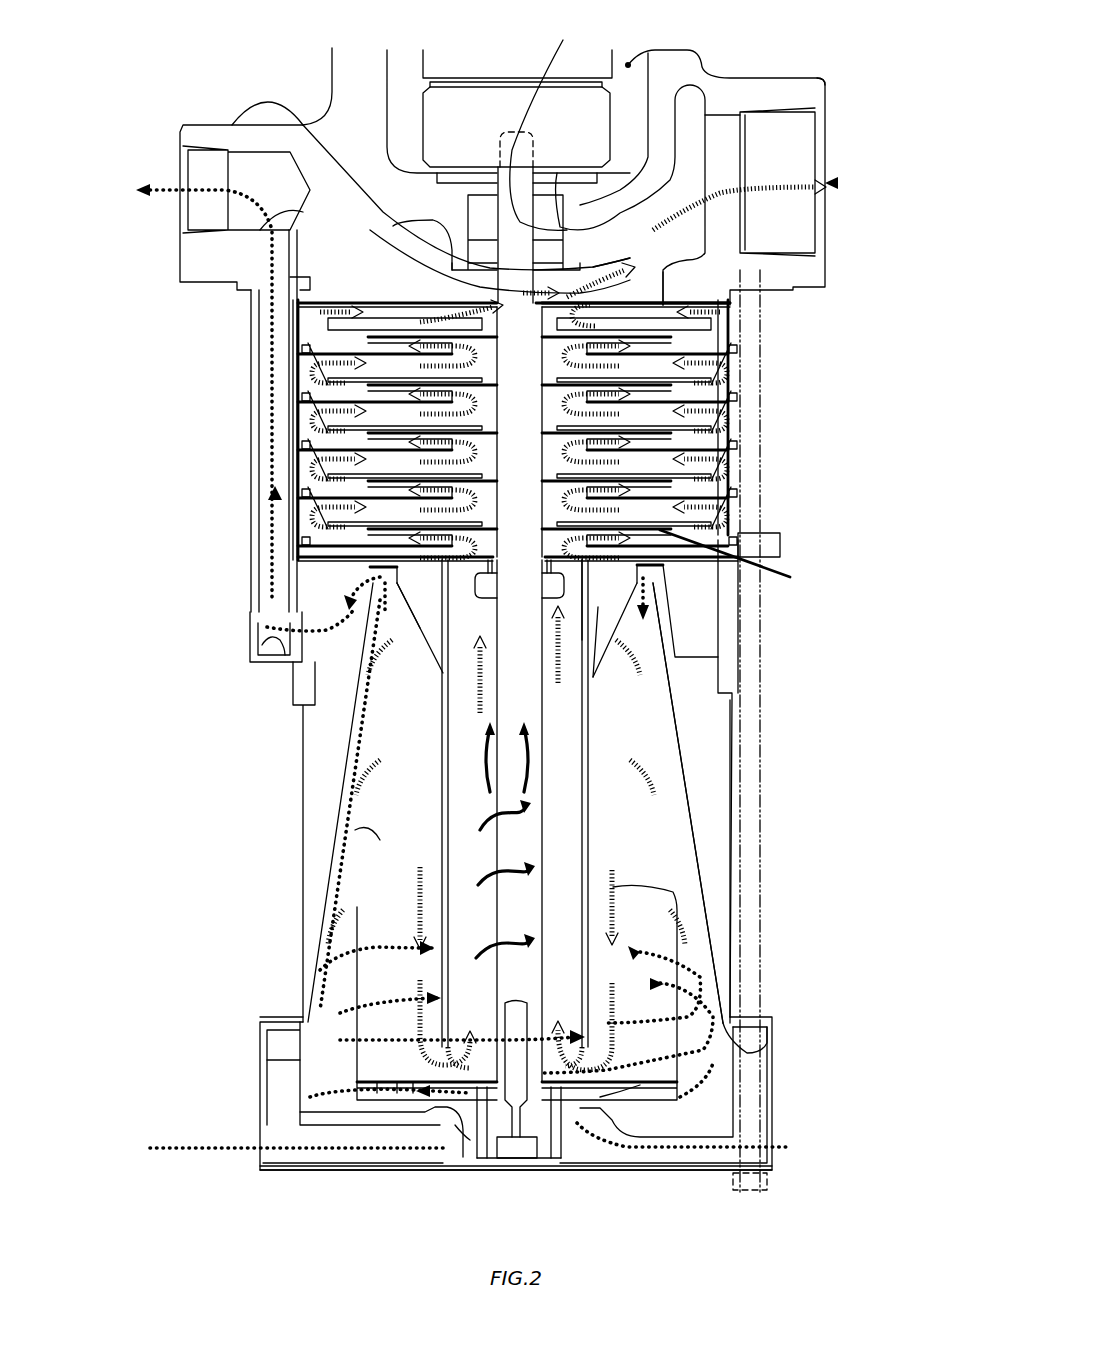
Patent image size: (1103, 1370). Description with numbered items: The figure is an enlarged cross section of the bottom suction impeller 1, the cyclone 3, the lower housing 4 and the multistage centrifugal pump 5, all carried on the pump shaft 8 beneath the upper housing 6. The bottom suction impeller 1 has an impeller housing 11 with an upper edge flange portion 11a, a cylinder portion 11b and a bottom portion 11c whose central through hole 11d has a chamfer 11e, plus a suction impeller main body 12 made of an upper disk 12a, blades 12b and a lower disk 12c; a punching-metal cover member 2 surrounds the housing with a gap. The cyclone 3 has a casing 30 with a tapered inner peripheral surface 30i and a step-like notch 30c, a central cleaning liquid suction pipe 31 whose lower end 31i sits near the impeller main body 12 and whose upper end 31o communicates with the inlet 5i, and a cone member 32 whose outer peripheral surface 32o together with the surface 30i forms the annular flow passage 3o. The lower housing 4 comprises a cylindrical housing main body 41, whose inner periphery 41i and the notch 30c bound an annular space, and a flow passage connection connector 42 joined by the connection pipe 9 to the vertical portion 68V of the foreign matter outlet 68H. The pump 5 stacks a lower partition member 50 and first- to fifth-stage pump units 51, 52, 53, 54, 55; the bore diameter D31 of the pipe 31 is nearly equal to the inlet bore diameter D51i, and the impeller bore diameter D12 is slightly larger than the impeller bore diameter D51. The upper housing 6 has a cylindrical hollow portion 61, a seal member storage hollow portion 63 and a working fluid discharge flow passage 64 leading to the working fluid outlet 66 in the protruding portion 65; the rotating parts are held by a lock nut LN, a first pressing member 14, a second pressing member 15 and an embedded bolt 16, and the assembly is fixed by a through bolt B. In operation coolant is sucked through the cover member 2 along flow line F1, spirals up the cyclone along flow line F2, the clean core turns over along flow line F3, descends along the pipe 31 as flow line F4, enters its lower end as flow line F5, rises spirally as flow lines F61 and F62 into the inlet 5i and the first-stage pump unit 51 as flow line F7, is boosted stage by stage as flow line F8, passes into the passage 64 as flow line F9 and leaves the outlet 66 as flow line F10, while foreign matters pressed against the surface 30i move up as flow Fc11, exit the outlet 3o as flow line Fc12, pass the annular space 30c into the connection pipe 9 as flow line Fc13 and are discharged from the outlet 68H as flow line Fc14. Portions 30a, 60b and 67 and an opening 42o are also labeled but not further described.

The bottom suction impeller 1 is at (470, 999).
The cover member 2 is at (620, 1170).
The cyclone 3 is at (545, 714).
The annular flow passage 3o is at (395, 570).
The lower housing 4 is at (195, 616).
The multistage centrifugal pump 5 is at (882, 345).
The inlet of the multistage centrifugal pump 5i is at (590, 625).
The upper housing 6 is at (900, 25).
The pump shaft 8 is at (663, 853).
The connection pipe 9 is at (255, 525).
The impeller housing 11 is at (456, 1115).
The upper edge flange portion 11a is at (290, 1020).
The cylinder portion 11b is at (300, 1070).
The bottom portion 11c is at (470, 1112).
The through hole 11d is at (490, 1158).
The chamfer 11e is at (465, 1140).
The suction impeller main body 12 is at (406, 969).
The upper disk 12a is at (377, 1093).
The blades 12b is at (397, 1093).
The lower disk 12c is at (413, 1090).
The first pressing member 14 is at (380, 845).
The second pressing member 15 is at (482, 1160).
The embedded bolt 16 is at (527, 1160).
The casing 30 is at (740, 763).
The upper flange of cylindrical body 30a is at (697, 637).
The step-like notch 30c is at (598, 607).
The inner peripheral surface 30i is at (440, 565).
The cleaning liquid suction pipe 31 is at (680, 805).
The upper end of the cleaning liquid suction pipe 31o is at (747, 562).
The lower end of the cleaning liquid suction pipe 31i is at (600, 1097).
The cone member 32 is at (640, 760).
The outer peripheral surface of the cone member 32o is at (415, 560).
The cylindrical housing main body 41 is at (225, 842).
The inner periphery of the lower housing 41i is at (643, 568).
The flow passage connection connector 42 is at (250, 635).
The exhaust chamber outlet 42o is at (262, 645).
The lower partition member 50 is at (780, 545).
The first-stage pump unit 51 is at (740, 512).
The second-stage pump unit 52 is at (740, 466).
The third-stage pump unit 53 is at (740, 418).
The fourth-stage pump unit 54 is at (740, 370).
The fifth-stage pump unit 55 is at (740, 322).
The drain opening 60b is at (740, 1047).
The cylindrical hollow portion 61 is at (727, 63).
The seal member storage hollow portion 63 is at (553, 180).
The working fluid discharge flow passage 64 is at (687, 193).
The protruding portion 65 is at (812, 72).
The working fluid outlet 66 is at (838, 183).
The lower wall of burner housing 67 is at (620, 270).
The foreign matter outlet 68H is at (630, 280).
The vertical portion 68V is at (575, 305).
The through bolt B is at (765, 1195).
The bore diameter of the bottom suction impeller D12 is at (362, 916).
The bore diameter of the cleaning liquid suction pipe D31 is at (452, 845).
The bore diameter of the impeller of the multistage centrifugal pump D51 is at (658, 766).
The bore diameter of the inlet of the multistage centrifugal pump D51i is at (450, 718).
The flow line F1 is at (170, 1148).
The spiral flow line F2 is at (395, 905).
The flow line F3 is at (640, 875).
The flow line F4 is at (660, 882).
The flow line F5 is at (560, 1120).
The flow line F61 is at (587, 955).
The flow line F62 is at (580, 668).
The flow line F7 is at (585, 640).
The flow line F8 is at (725, 322).
The flow line F9 is at (760, 296).
The flow line F10 is at (545, 121).
The flow Fc11 is at (385, 818).
The flow line Fc12 is at (380, 578).
The flow line Fc13 is at (273, 587).
The flow line Fc14 is at (170, 185).
The lock nut LN is at (497, 600).